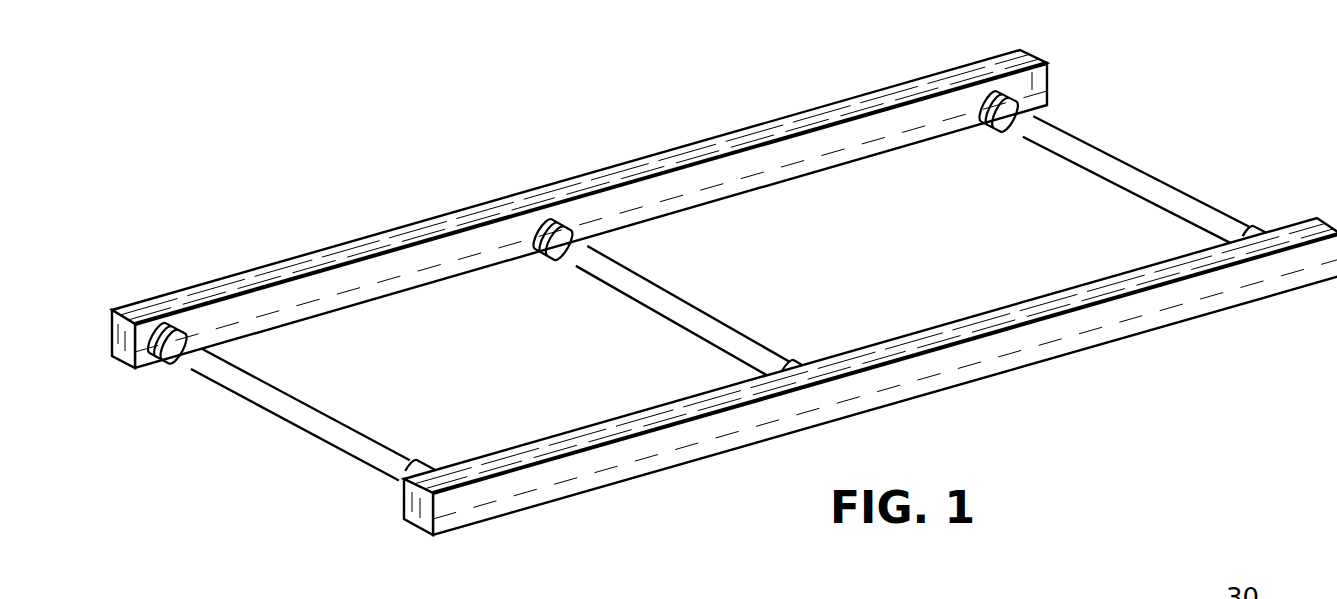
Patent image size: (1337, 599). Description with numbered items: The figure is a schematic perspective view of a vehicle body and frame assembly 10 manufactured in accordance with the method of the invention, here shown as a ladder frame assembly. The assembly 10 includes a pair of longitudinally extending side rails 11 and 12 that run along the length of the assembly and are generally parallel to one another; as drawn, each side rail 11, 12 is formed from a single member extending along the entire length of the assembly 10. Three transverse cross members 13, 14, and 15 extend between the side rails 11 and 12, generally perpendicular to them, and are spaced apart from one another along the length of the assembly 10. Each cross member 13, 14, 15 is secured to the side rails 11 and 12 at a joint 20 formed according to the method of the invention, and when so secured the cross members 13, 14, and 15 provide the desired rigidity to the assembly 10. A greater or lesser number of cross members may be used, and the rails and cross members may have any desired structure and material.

The vehicle body and frame assembly 10 is at (724, 292).
The side rail 11 is at (873, 400).
The side rail 12 is at (462, 220).
The cross member 13 is at (297, 408).
The cross member 14 is at (676, 300).
The cross member 15 is at (1131, 175).
The joint 20 is at (192, 312).